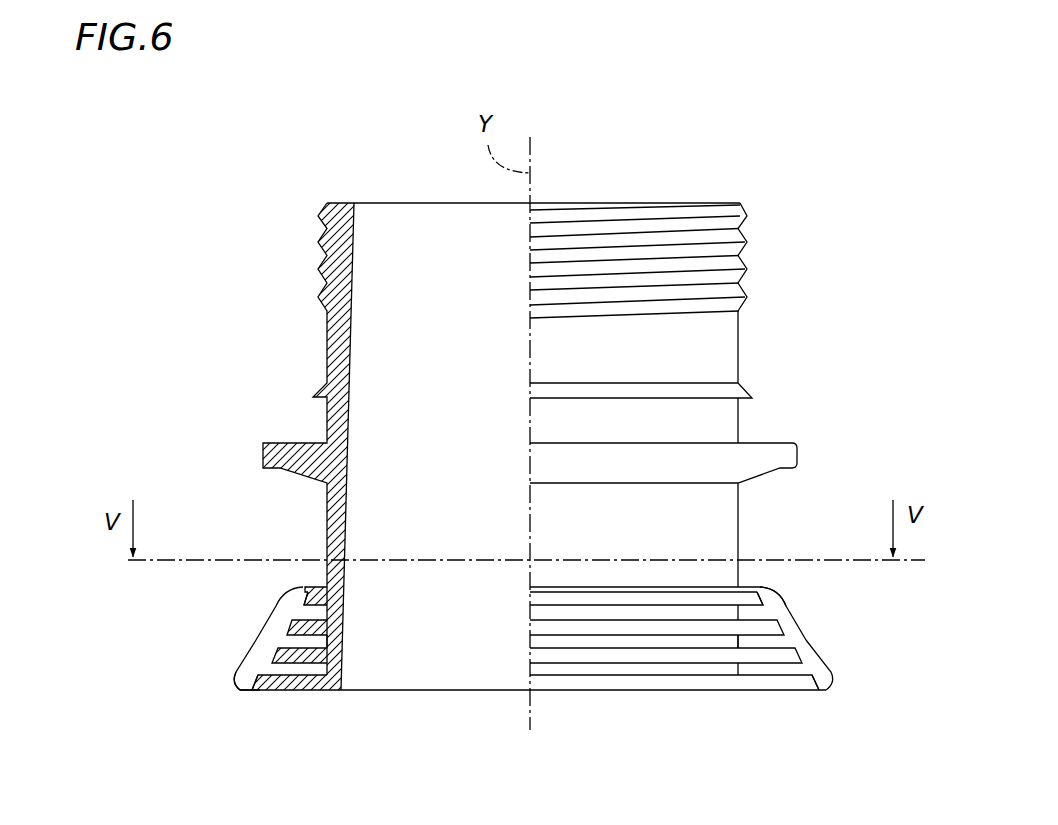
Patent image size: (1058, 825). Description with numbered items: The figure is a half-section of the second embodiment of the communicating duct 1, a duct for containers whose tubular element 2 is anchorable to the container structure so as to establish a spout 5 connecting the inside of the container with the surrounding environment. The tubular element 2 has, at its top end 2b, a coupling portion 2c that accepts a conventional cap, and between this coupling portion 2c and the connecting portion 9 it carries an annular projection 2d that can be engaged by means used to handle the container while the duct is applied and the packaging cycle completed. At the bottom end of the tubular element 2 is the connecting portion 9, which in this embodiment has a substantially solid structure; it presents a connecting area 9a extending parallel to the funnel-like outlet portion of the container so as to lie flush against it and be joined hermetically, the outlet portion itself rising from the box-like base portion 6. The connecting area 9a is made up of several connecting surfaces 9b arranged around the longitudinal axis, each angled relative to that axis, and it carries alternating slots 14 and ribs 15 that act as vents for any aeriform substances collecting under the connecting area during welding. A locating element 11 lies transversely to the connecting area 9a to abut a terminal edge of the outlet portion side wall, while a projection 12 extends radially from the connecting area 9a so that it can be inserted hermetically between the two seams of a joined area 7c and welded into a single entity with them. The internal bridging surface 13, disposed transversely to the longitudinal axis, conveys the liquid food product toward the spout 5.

The communicating duct 1 is at (603, 170).
The tubular element 2 is at (302, 343).
The top end 2b is at (770, 258).
The coupling portion 2c is at (763, 208).
The annular projection 2d is at (780, 455).
The spout 5 is at (393, 225).
The base portion 6 is at (240, 687).
The joined area 7c is at (778, 614).
The connecting portion 9 is at (275, 698).
The connecting area 9a is at (283, 623).
The connecting surface 9b is at (268, 652).
The locating element 11 is at (313, 583).
The projection 12 is at (245, 663).
The internal bridging surface 13 is at (335, 697).
The slot 14 is at (300, 670).
The rib 15 is at (307, 597).